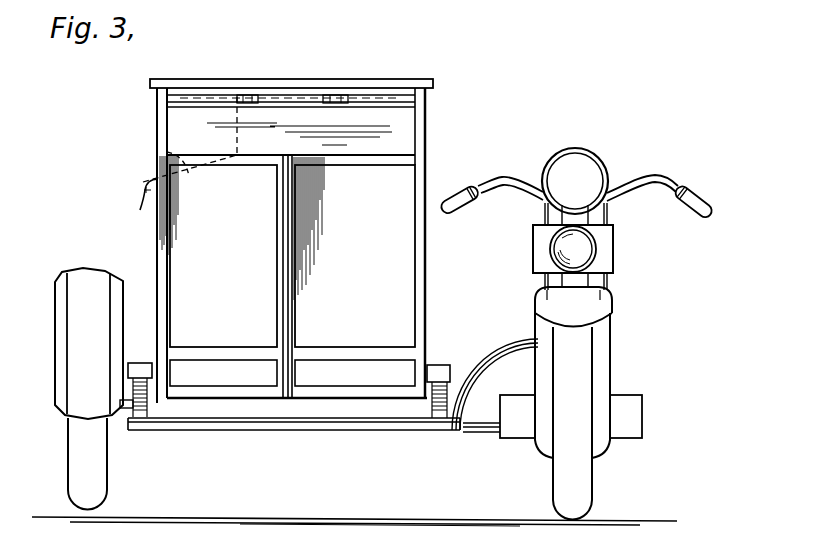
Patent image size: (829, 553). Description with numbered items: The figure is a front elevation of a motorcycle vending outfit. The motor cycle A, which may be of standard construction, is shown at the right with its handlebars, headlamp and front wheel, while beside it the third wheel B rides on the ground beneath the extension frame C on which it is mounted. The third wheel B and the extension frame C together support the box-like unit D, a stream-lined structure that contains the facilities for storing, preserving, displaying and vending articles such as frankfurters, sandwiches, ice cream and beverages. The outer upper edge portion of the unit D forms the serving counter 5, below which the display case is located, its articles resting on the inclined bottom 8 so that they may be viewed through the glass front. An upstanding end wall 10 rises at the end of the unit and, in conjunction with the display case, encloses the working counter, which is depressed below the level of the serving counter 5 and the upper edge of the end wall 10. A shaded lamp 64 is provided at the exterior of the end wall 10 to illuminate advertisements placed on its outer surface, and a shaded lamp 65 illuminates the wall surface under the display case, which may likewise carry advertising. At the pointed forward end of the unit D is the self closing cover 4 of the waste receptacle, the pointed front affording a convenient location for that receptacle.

The serving counter 5 is at (200, 81).
The upstanding end wall 10 is at (327, 70).
The shaded lamp 64 is at (414, 99).
The box-like unit D is at (430, 125).
The inclined bottom 8 is at (165, 147).
The self closing cover 4 is at (270, 159).
The shaded lamp 65 is at (147, 203).
The motor cycle A is at (621, 316).
The third wheel B is at (67, 471).
The extension frame C is at (245, 432).